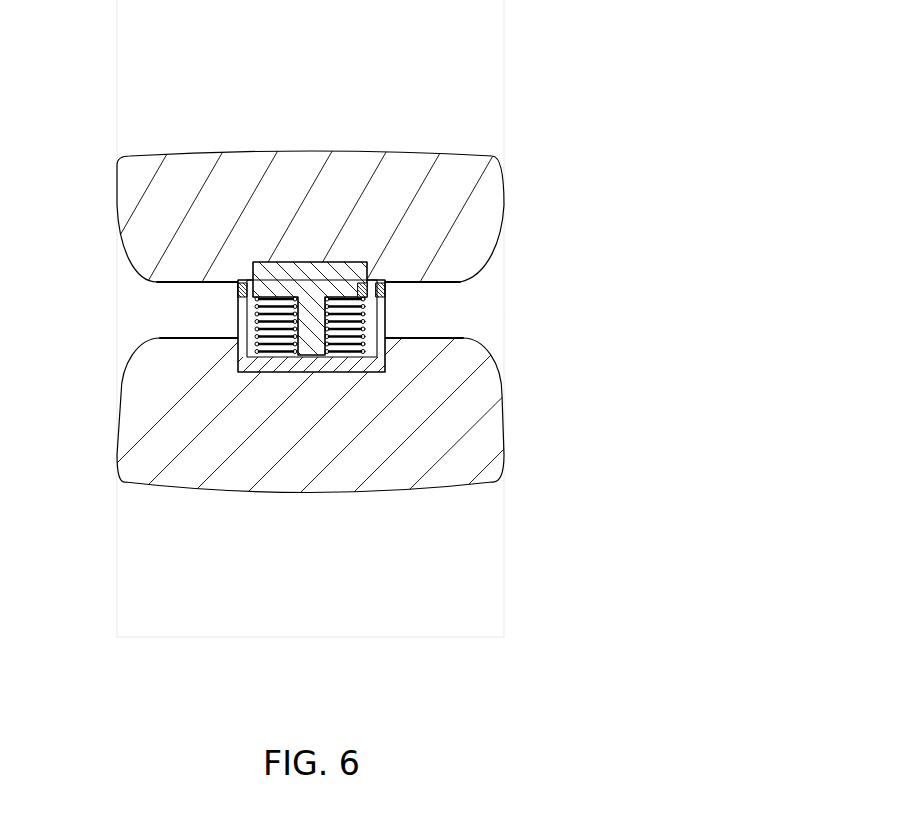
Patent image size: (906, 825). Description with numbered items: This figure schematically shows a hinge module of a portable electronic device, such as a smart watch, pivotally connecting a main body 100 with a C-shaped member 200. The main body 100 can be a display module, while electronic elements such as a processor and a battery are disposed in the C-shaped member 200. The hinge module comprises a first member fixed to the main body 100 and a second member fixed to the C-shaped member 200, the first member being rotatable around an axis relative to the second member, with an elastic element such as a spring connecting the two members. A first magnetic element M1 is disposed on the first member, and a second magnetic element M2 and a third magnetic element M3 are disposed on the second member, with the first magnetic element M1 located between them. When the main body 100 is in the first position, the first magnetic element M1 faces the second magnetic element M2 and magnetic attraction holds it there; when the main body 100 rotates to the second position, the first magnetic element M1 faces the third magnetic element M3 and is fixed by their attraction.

The main body 100 is at (506, 89).
The C-shaped member 200 is at (506, 553).
The first magnetic element M1 is at (367, 262).
The second magnetic element M2 is at (385, 290).
The third magnetic element M3 is at (240, 292).